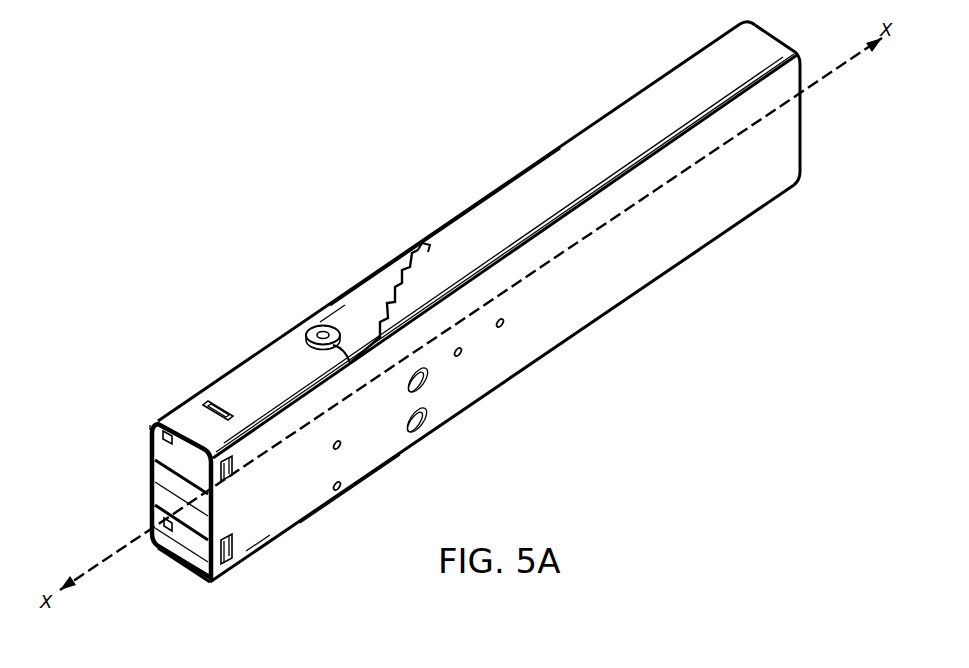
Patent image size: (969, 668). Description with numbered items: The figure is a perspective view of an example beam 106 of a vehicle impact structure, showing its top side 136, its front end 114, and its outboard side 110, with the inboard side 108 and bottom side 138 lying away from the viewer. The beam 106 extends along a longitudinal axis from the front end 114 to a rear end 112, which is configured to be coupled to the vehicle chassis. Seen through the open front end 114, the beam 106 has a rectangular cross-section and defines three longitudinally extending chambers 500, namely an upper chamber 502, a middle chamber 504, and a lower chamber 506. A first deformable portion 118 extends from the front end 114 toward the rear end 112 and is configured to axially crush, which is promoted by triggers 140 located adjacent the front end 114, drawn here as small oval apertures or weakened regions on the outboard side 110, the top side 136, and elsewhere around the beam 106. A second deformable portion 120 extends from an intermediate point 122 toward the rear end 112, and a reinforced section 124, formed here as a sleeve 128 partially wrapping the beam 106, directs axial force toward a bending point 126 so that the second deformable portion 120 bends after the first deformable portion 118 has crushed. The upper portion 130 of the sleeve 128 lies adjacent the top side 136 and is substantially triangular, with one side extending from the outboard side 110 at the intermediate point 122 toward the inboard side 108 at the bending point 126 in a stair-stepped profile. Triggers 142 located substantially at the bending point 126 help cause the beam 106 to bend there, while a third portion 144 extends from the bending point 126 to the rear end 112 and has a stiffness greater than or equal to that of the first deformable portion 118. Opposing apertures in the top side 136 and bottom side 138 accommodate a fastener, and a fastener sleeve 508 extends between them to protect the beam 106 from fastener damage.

The beam 106 is at (660, 265).
The inboard side 108 is at (667, 79).
The outboard side 110 is at (723, 206).
The rear end 112 is at (760, 25).
The front end 114 is at (168, 419).
The first deformable portion 118 is at (246, 551).
The second deformable portion 120 is at (442, 412).
The intermediate point 122 is at (343, 373).
The reinforced section 124 is at (417, 310).
The bending point 126 is at (418, 248).
The sleeve 128 is at (330, 310).
The upper portion 130 is at (362, 325).
The top side 136 is at (601, 143).
The bottom side 138 is at (342, 493).
The triggers 140 is at (210, 403).
The triggers 142 is at (430, 248).
The third portion 144 is at (705, 217).
The chambers 500 is at (185, 600).
The upper chamber 502 is at (172, 462).
The middle chamber 504 is at (155, 494).
The lower chamber 506 is at (197, 566).
The fastener sleeve 508 is at (310, 333).